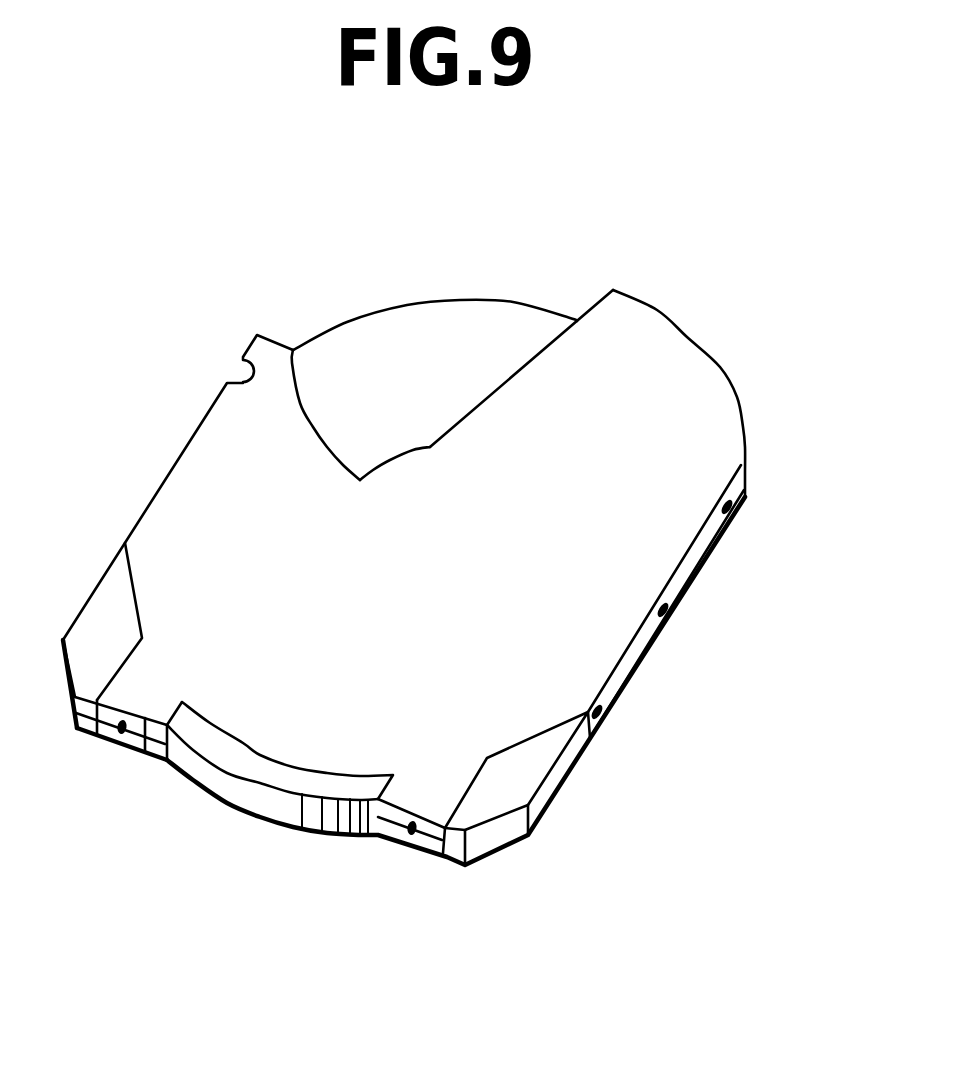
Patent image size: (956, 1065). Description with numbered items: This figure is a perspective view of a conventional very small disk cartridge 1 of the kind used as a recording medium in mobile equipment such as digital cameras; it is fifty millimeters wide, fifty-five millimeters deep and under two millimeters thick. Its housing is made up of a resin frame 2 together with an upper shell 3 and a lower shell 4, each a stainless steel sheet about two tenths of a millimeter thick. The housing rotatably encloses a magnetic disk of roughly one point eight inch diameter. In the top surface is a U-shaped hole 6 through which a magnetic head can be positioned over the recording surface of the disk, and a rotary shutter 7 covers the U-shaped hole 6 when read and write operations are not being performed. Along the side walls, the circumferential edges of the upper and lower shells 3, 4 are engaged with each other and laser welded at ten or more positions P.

The disk cartridge 1 is at (458, 580).
The resin frame 2 is at (493, 802).
The upper shell 3 is at (627, 320).
The lower shell 4 is at (700, 575).
The U-shaped hole 6 is at (530, 357).
The rotary shutter 7 is at (365, 337).
The laser welding positions P is at (735, 518).